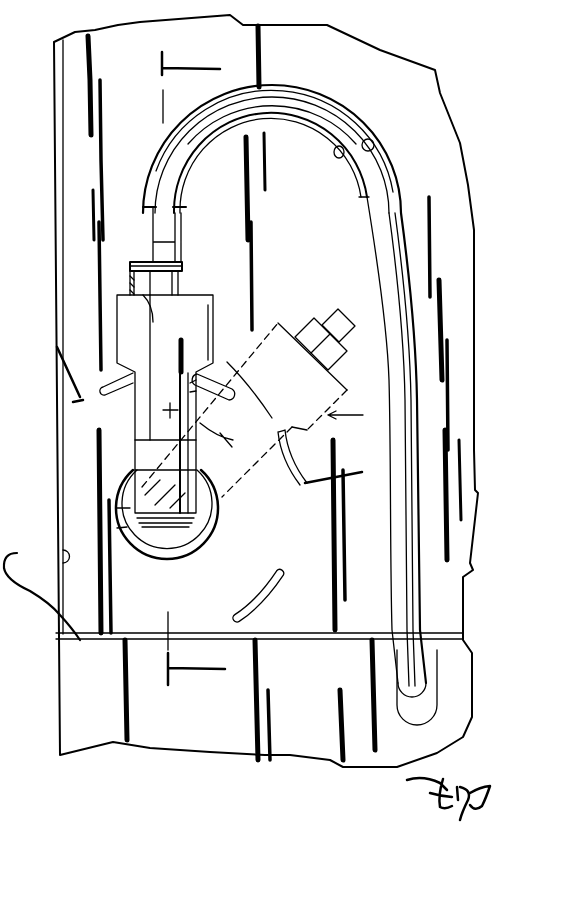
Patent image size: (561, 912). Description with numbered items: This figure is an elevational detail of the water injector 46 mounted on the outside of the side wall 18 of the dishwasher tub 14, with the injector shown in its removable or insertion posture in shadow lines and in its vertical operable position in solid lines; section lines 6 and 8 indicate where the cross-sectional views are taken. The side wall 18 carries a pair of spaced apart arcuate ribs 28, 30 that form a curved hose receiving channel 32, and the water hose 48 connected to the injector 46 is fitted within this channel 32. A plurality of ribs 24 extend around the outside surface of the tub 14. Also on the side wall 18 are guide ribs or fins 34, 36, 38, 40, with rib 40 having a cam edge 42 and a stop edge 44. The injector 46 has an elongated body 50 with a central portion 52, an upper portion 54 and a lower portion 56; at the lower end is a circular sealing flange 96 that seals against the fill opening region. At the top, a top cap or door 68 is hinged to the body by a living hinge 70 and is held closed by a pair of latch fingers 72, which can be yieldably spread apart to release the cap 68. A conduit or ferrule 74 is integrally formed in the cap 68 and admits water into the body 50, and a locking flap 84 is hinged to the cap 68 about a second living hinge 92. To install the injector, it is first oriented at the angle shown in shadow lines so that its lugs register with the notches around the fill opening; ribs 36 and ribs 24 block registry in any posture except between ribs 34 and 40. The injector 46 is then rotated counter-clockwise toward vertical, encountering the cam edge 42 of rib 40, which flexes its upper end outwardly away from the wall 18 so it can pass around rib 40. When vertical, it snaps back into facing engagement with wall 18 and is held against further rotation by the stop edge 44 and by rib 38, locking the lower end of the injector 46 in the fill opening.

The section line 6- 6 is at (193, 368).
The section line 8- 8 is at (197, 425).
The tub 14 is at (453, 301).
The side wall 18 is at (455, 318).
The ribs 24 is at (63, 550).
The arcuate rib 28 is at (348, 120).
The arcuate rib 30 is at (352, 124).
The hose receiving channel 32 is at (373, 141).
The guide rib 34 is at (293, 467).
The guide rib 36 is at (278, 573).
The guide rib 38 is at (112, 400).
The guide rib 40 is at (225, 368).
The cam edge 42 is at (232, 382).
The stop edge 44 is at (232, 397).
The water injector 46 is at (43, 443).
The water hose 48 is at (400, 333).
The elongated body 50 is at (217, 515).
The central portion 52 is at (203, 453).
The upper portion 54 is at (200, 305).
The lower portion 56 is at (127, 507).
The top cap 68 is at (184, 280).
The living hinge 70 is at (157, 295).
The latch fingers 72 is at (197, 297).
The ferrule 74 is at (150, 229).
The locking flap 84 is at (183, 262).
The living hinge 92 is at (117, 300).
The circular sealing flange 96 is at (127, 527).